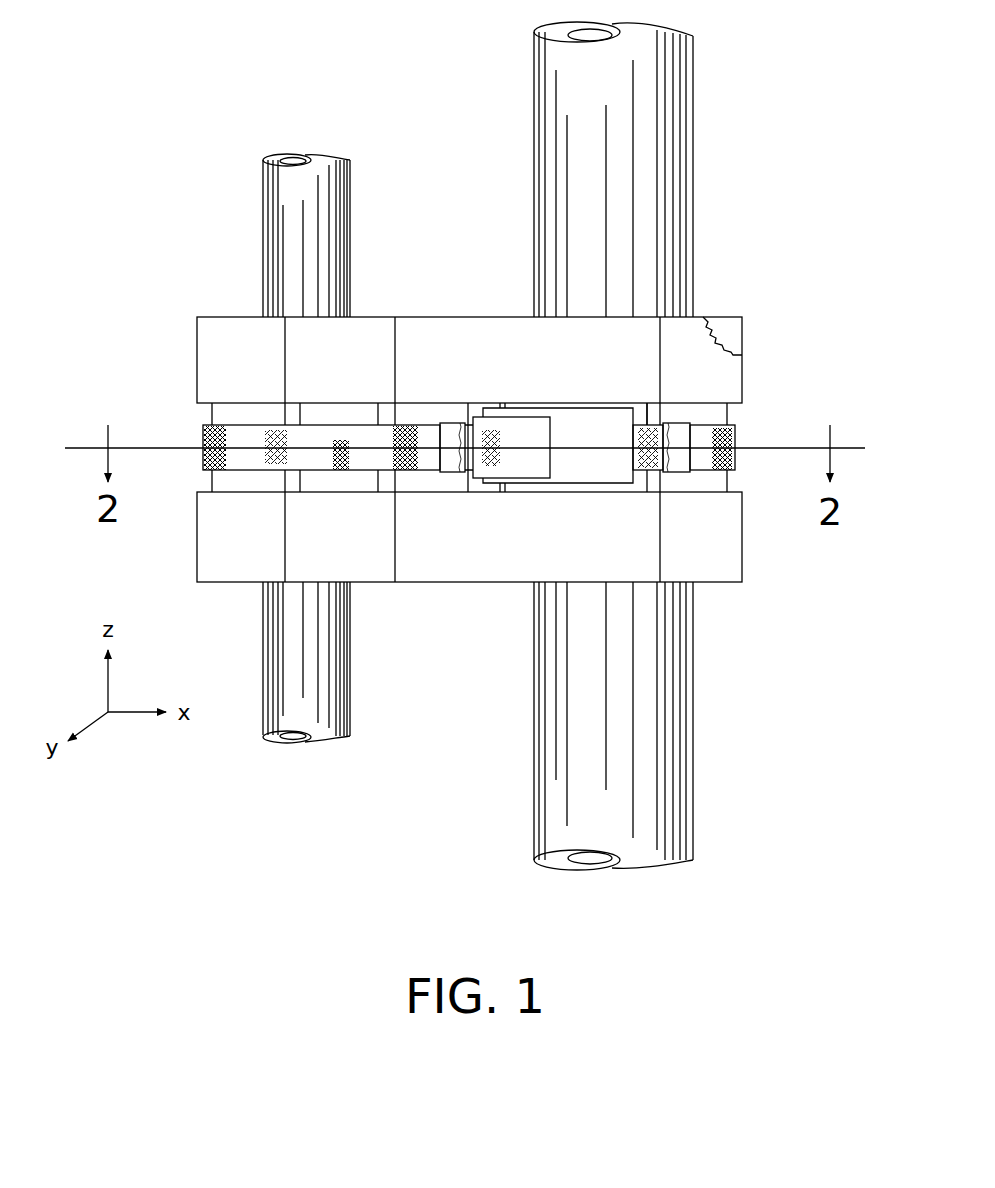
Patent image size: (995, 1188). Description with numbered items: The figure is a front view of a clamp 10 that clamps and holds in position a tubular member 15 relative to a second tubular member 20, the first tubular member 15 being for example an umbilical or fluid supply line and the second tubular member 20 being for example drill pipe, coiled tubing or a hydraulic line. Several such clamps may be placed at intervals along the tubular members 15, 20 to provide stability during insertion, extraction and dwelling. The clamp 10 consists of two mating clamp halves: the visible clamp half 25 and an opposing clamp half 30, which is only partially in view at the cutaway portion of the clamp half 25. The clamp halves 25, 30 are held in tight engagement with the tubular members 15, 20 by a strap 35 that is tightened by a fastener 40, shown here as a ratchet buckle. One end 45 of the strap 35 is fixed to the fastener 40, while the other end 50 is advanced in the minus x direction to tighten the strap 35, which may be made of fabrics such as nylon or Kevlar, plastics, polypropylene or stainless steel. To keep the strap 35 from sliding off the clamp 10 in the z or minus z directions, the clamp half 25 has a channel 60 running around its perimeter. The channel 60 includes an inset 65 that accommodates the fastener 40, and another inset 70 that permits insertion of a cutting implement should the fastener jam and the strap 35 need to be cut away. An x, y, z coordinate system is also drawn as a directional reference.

The clamp 10 is at (170, 240).
The tubular member 15 is at (298, 193).
The tubular member 20 is at (548, 103).
The clamp half 25 is at (710, 373).
The clamp half 30 is at (730, 327).
The strap 35 is at (248, 458).
The fastener 40 is at (583, 470).
The end of the strap 45 is at (660, 462).
The end of the strap 50 is at (477, 458).
The channel 60 is at (248, 413).
The inset 65 is at (640, 405).
The inset 70 is at (335, 480).